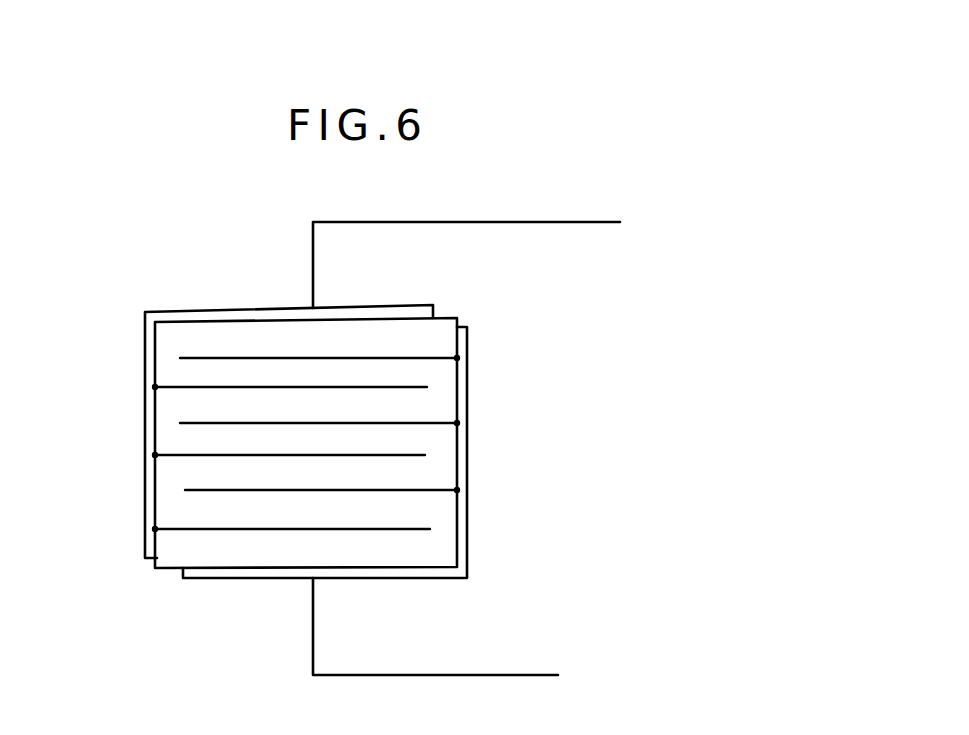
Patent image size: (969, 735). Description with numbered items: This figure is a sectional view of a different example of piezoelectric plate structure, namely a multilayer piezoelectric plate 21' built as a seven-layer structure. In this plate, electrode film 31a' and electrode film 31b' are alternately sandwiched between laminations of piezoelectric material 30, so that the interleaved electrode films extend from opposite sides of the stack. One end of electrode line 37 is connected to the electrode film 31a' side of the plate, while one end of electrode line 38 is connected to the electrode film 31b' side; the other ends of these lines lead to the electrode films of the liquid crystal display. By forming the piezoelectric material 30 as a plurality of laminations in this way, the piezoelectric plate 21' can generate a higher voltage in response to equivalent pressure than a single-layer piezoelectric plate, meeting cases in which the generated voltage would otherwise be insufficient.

The multilayer piezoelectric plate 21' is at (313, 398).
The piezoelectric material 30 is at (427, 410).
The electrode film 31a' is at (235, 431).
The electrode film 31b' is at (385, 452).
The electrode line 37 is at (545, 165).
The electrode line 38 is at (490, 675).